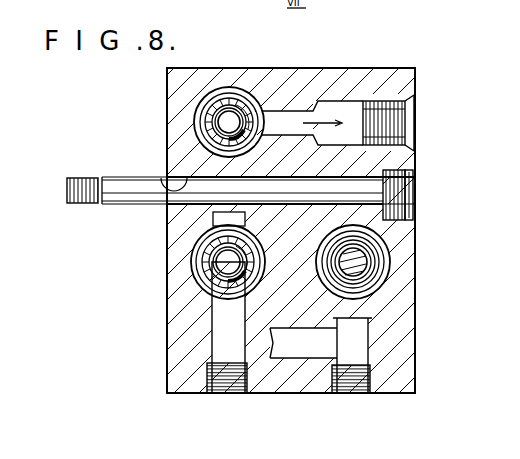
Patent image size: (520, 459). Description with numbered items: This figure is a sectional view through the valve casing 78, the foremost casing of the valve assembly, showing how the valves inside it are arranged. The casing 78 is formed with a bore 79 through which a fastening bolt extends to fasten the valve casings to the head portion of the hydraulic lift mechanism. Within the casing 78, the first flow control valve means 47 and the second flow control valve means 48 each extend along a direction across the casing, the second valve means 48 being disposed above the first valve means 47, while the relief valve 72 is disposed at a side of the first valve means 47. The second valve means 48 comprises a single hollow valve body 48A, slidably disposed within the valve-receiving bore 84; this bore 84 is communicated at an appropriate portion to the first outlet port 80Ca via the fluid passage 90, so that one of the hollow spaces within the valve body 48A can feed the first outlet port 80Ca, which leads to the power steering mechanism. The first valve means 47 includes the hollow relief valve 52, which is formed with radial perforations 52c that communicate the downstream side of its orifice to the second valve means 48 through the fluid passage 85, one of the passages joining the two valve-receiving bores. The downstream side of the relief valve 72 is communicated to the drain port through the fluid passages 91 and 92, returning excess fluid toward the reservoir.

The second flow control valve means 48 is at (218, 92).
The single hollow valve body 48A is at (258, 100).
The fluid passage 90 is at (285, 125).
The first outlet port 80Ca is at (407, 118).
The valve-receiving bore 84 is at (207, 117).
The bore 79 is at (162, 180).
The fluid passage 85 is at (247, 191).
The relief valve 52 is at (197, 243).
The radial perforations 52c is at (256, 248).
The first flow control valve means 47 is at (194, 281).
The relief valve 72 is at (345, 257).
The valve casing 78 is at (393, 303).
The fluid passage 92 is at (293, 340).
The fluid passage 91 is at (352, 330).